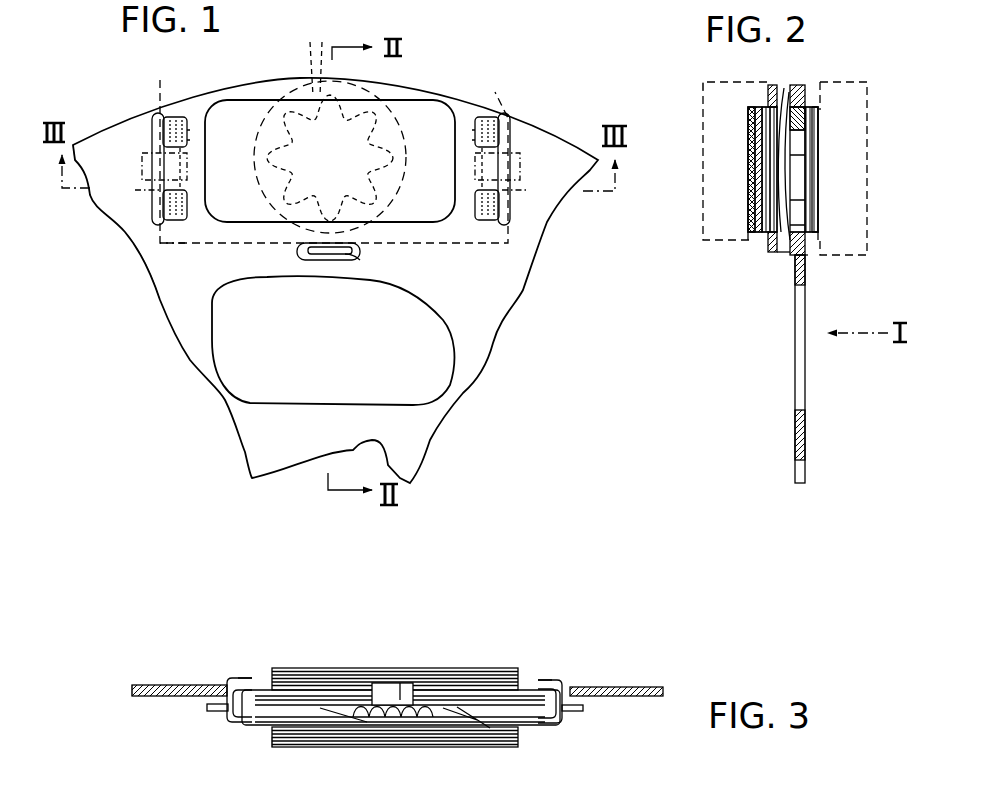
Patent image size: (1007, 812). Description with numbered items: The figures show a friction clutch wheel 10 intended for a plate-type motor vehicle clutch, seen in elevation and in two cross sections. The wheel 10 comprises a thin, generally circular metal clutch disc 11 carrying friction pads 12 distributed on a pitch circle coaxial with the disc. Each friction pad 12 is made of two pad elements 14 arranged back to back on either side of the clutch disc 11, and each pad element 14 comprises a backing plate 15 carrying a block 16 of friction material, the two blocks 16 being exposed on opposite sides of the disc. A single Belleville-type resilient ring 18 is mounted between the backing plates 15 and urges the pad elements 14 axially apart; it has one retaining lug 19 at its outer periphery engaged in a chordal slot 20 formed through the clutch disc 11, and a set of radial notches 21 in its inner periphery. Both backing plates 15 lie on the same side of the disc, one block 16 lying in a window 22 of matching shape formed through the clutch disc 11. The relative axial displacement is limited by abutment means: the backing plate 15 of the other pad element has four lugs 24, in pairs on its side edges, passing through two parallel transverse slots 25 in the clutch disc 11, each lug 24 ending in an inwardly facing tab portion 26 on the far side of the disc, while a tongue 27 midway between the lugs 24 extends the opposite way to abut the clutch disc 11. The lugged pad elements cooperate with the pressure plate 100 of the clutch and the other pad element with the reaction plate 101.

In FIG. 1, the friction clutch wheel 10 is at (85, 112).
In FIG. 2, the friction clutch wheel 10 is at (701, 70).
In FIG. 3, the friction clutch wheel 10 is at (147, 666).
In FIG. 1, the clutch disc 11 is at (531, 297).
In FIG. 2, the clutch disc 11 is at (793, 362).
In FIG. 3, the clutch disc 11 is at (661, 685).
In FIG. 1, the friction pad 12 is at (190, 258).
In FIG. 2, the friction pad 12 is at (833, 106).
In FIG. 3, the friction pad 12 is at (262, 737).
In FIG. 1, the pad element 14 is at (423, 231).
In FIG. 2, the pad element 14 is at (752, 242).
In FIG. 3, the pad element 14 is at (438, 666).
In FIG. 1, the backing plate 15 is at (180, 112).
In FIG. 2, the backing plate 15 is at (808, 75).
In FIG. 3, the backing plate 15 is at (350, 695).
In FIG. 1, the block of friction material 16 is at (346, 173).
In FIG. 2, the block of friction material 16 is at (752, 178).
In FIG. 3, the block of friction material 16 is at (484, 675).
In FIG. 2, the resilient ring 18 is at (786, 110).
In FIG. 3, the resilient ring 18 is at (478, 722).
In FIG. 1, the retaining lug 19 is at (323, 262).
In FIG. 2, the retaining lug 19 is at (805, 257).
In FIG. 3, the retaining lug 19 is at (400, 684).
In FIG. 1, the slot 20 is at (360, 262).
In FIG. 2, the slot 20 is at (786, 257).
In FIG. 1, the radial notches 21 is at (297, 63).
In FIG. 2, the radial notches 21 is at (752, 125).
In FIG. 3, the radial notches 21 is at (355, 715).
In FIG. 1, the window 22 is at (258, 240).
In FIG. 3, the window 22 is at (516, 690).
In FIG. 1, the lug 24 is at (178, 118).
In FIG. 3, the lug 24 is at (228, 722).
In FIG. 1, the transverse slot 25 is at (152, 120).
In FIG. 3, the transverse slot 25 is at (227, 680).
In FIG. 1, the tab portion 26 is at (187, 135).
In FIG. 3, the tab portion 26 is at (242, 678).
In FIG. 1, the tongue 27 is at (148, 172).
In FIG. 3, the tongue 27 is at (207, 708).
In FIG. 2, the pressure plate 100 is at (703, 238).
In FIG. 2, the reaction plate 101 is at (843, 80).